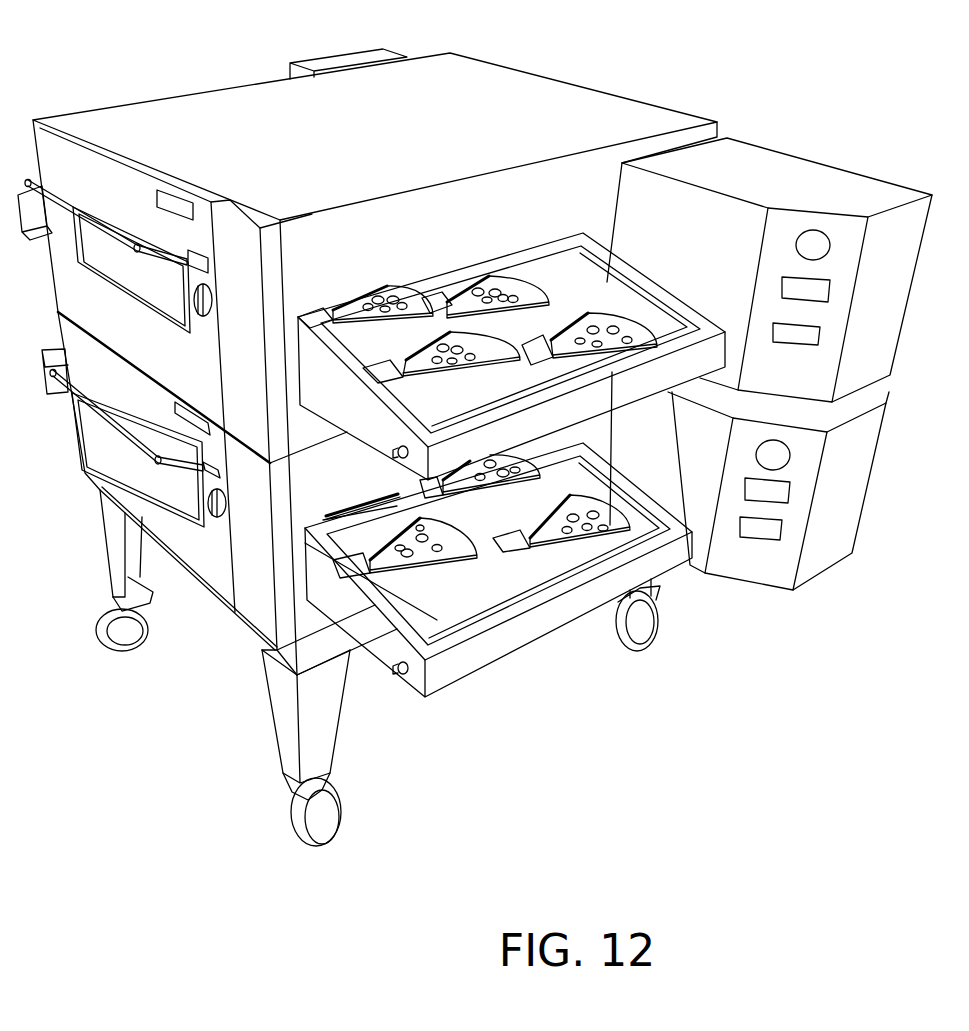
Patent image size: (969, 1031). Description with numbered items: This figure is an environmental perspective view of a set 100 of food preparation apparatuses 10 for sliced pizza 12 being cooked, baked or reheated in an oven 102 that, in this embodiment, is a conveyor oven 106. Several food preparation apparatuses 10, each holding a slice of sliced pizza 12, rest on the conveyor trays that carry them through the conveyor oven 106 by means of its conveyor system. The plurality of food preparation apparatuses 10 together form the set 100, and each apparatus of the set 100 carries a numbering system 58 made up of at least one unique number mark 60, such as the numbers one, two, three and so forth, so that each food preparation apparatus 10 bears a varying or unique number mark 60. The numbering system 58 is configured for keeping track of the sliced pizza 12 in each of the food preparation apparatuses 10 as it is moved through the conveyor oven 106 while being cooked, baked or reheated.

The food preparation apparatus 10 is at (372, 334).
The sliced pizza 12 is at (430, 286).
The numbering system 58 is at (527, 238).
The unique number mark 60 is at (322, 306).
The set of food preparation apparatuses 100 is at (635, 270).
The oven 102 is at (375, 124).
The conveyor oven 106 is at (597, 98).